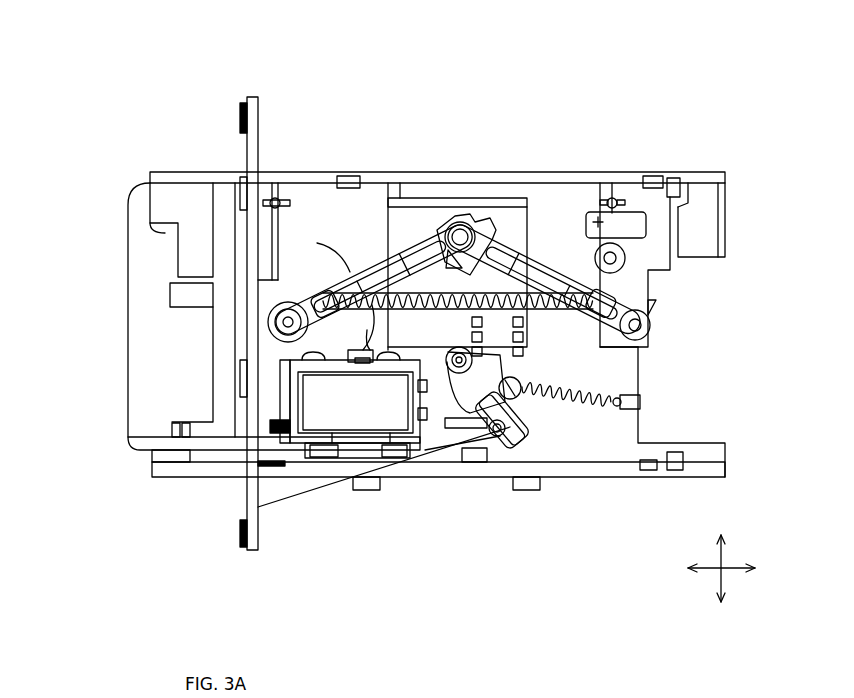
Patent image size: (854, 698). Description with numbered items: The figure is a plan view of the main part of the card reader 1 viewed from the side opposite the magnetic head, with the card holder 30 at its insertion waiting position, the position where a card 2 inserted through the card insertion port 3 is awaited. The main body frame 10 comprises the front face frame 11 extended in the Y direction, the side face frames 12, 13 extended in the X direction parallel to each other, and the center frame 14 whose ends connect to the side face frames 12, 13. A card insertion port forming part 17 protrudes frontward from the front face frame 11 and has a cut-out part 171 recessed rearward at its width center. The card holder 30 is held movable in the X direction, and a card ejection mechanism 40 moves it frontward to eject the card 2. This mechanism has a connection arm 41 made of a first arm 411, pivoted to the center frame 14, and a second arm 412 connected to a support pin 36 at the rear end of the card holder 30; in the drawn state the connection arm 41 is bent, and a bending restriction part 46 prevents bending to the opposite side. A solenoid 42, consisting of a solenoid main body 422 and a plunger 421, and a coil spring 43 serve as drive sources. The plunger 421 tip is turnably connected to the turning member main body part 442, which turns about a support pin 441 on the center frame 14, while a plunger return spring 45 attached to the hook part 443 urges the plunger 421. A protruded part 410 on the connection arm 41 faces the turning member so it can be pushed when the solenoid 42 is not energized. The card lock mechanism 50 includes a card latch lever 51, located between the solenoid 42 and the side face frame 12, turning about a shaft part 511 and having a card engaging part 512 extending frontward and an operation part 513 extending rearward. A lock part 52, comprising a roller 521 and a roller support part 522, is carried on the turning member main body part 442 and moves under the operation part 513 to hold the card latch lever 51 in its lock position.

The card reader 1 is at (718, 58).
The card 2 is at (128, 287).
The card insertion port 3 is at (120, 306).
The main body frame 10 is at (287, 170).
The front face frame 11 is at (246, 145).
The side face frame 12 is at (607, 480).
The side face frame 13 is at (625, 172).
The center frame 14 is at (617, 443).
The card insertion port forming part 17 is at (185, 172).
The cut-out part 171 is at (163, 232).
The card holder 30 is at (642, 340).
The support pin 36 is at (660, 300).
The card ejection mechanism 40 is at (396, 240).
The connection arm 41 is at (540, 94).
The protruded part 410 is at (380, 255).
The first arm 411 is at (408, 268).
The second arm 412 is at (548, 278).
The coil spring 43 is at (560, 298).
The bending restriction part 46 is at (472, 206).
The support pin 441 is at (473, 352).
The turning member main body part 442 is at (512, 367).
The hook part 443 is at (520, 390).
The plunger return spring 45 is at (582, 403).
The solenoid 42 is at (447, 580).
The plunger 421 is at (423, 449).
The solenoid main body 422 is at (367, 412).
The card lock mechanism 50 is at (445, 463).
The card latch lever 51 is at (140, 447).
The shaft part 511 is at (272, 466).
The card engaging part 512 is at (220, 448).
The operation part 513 is at (490, 428).
The lock part 52 is at (602, 563).
The roller 521 is at (507, 446).
The roller support part 522 is at (527, 425).